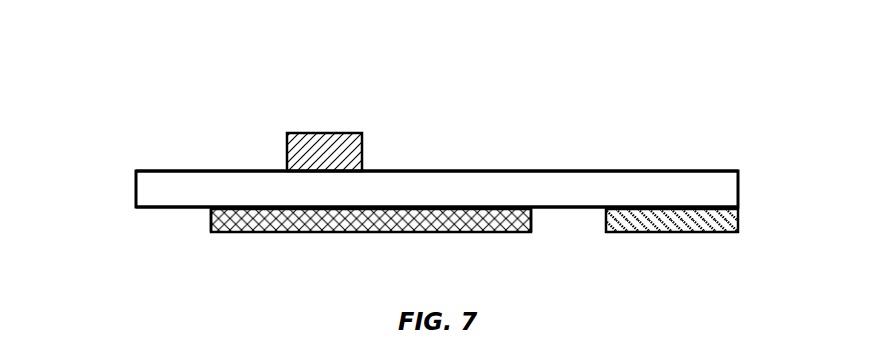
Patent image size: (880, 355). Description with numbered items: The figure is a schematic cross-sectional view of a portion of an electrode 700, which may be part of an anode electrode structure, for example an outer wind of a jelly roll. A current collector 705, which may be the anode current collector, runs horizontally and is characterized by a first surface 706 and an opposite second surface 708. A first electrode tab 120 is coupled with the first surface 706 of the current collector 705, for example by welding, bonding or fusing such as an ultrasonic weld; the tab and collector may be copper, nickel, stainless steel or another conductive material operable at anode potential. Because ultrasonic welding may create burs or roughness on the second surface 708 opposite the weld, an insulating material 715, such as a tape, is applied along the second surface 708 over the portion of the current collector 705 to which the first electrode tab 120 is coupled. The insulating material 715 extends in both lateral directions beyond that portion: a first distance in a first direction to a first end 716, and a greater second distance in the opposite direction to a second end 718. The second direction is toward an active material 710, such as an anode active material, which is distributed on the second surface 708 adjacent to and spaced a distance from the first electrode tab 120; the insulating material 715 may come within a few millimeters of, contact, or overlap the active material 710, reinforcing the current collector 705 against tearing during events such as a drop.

The electrode 700 is at (143, 80).
The current collector 705 is at (136, 190).
The first surface 706 is at (192, 170).
The second surface 708 is at (148, 208).
The first electrode tab 120 is at (306, 133).
The insulating material 715 is at (297, 233).
The first end 716 is at (211, 225).
The second end 718 is at (531, 221).
The active material 710 is at (675, 233).